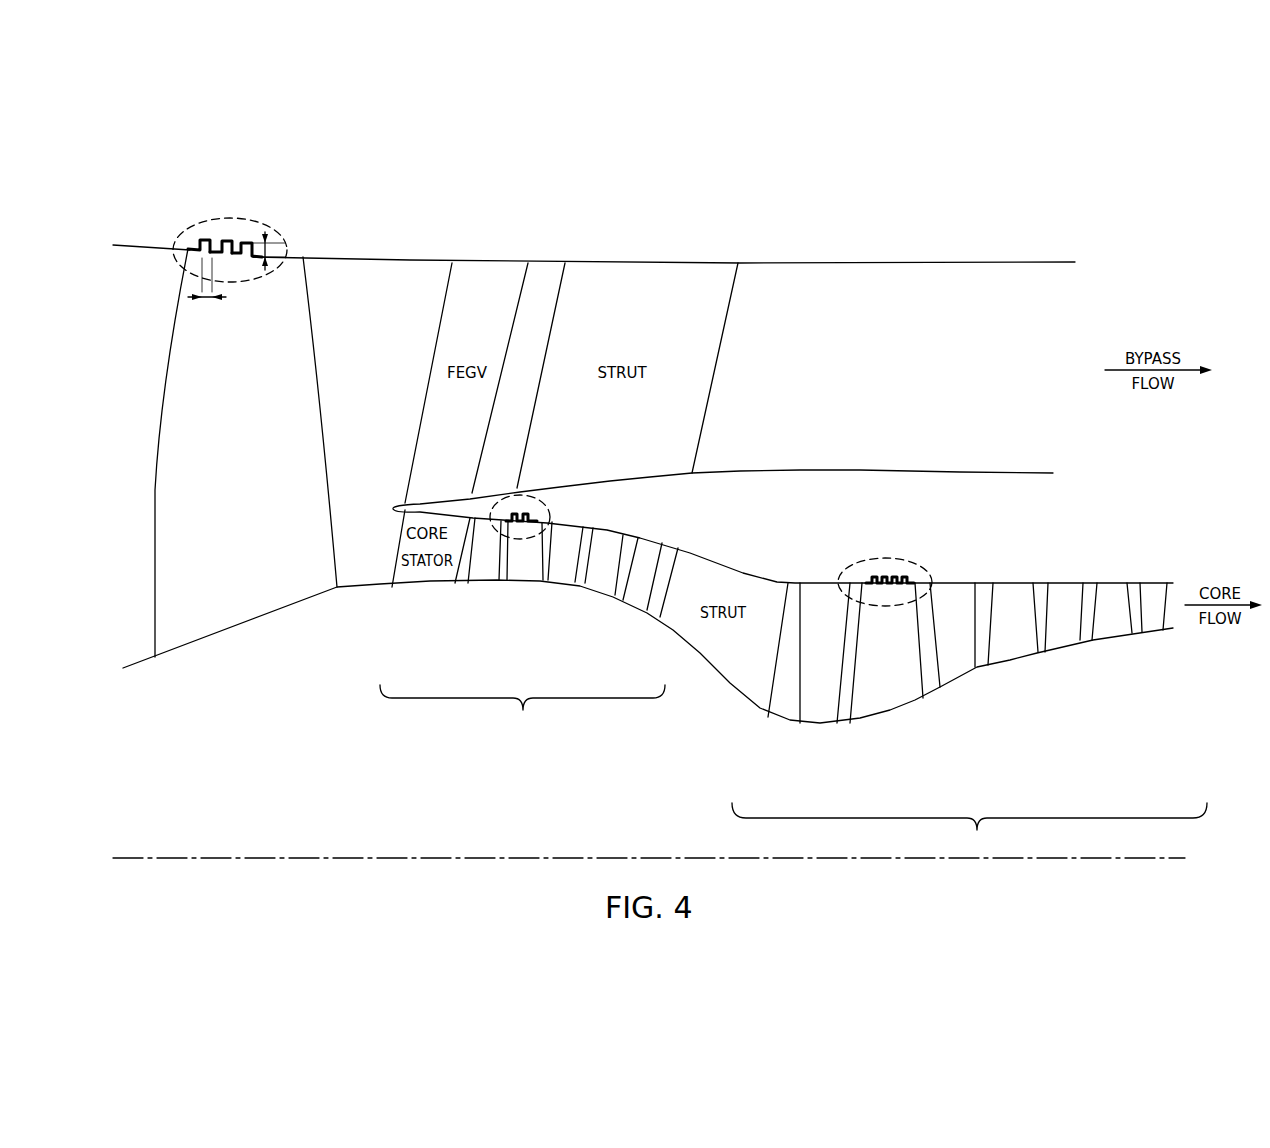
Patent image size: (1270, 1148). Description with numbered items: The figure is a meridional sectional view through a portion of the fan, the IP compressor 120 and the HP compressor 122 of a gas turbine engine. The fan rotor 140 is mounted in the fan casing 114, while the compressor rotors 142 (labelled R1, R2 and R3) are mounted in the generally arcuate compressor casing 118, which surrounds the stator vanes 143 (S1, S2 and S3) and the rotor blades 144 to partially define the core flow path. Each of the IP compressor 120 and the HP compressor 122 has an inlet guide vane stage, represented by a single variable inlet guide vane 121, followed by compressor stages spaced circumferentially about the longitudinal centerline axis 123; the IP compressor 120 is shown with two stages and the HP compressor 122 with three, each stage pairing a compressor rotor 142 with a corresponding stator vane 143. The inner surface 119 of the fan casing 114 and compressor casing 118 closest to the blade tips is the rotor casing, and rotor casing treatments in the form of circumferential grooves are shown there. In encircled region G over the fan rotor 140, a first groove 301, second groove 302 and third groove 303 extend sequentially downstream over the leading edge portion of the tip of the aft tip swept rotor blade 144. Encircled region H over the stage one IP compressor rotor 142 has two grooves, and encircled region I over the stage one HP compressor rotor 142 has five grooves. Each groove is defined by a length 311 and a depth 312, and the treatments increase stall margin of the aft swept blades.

The fan casing 114 is at (130, 245).
The compressor casing 118 is at (737, 570).
The inner surface (rotor casing) 119 is at (306, 258).
The IP compressor 120 is at (522, 711).
The variable inlet guide vane 121 is at (472, 600).
The HP compressor 122 is at (969, 829).
The longitudinal centerline axis 123 is at (213, 857).
The fan rotor 140 is at (132, 366).
The compressor rotor 142 is at (888, 738).
The stator vane 143 is at (553, 598).
The rotor blade 144 is at (233, 501).
The first groove 301 is at (204, 238).
The second groove 302 is at (227, 240).
The third groove 303 is at (246, 242).
The groove length 311 is at (207, 300).
The groove depth 312 is at (281, 240).
The encircled region G is at (253, 284).
The encircled region H is at (532, 495).
The encircled region I is at (882, 558).